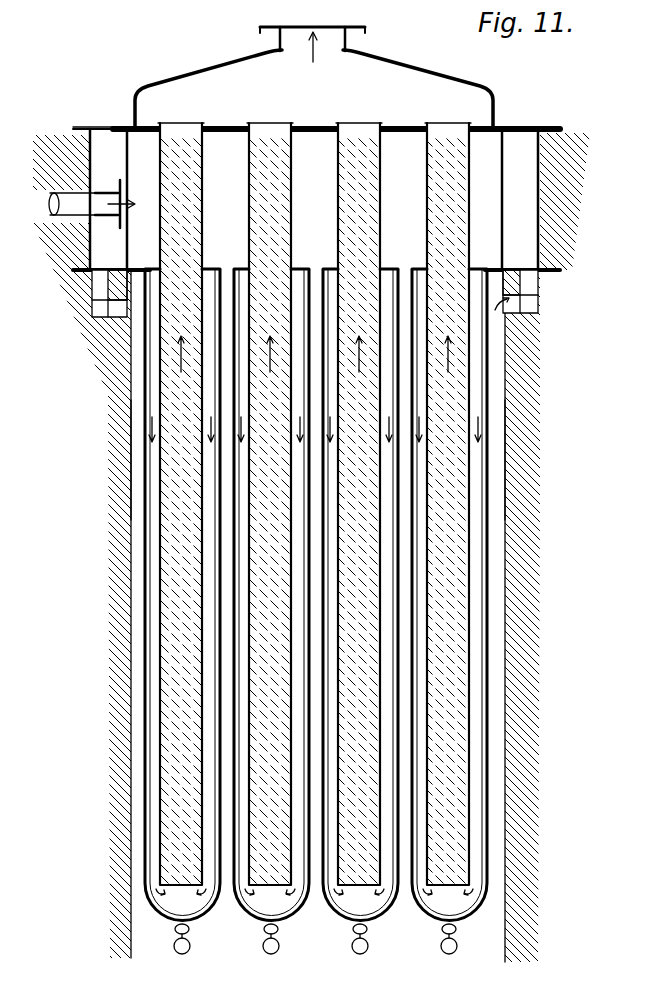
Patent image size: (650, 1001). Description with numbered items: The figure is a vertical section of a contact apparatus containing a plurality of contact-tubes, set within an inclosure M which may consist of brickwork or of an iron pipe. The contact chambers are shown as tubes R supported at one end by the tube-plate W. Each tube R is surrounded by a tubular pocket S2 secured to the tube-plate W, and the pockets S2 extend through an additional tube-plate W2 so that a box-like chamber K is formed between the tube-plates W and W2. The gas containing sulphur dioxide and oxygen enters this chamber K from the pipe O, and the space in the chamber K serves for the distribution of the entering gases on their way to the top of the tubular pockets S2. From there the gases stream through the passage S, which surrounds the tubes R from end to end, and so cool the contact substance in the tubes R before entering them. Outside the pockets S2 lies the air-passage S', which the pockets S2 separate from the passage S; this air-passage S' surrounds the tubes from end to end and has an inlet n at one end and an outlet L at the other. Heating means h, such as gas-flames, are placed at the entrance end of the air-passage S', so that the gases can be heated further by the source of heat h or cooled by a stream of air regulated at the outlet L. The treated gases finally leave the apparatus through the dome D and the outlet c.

The inclosure M is at (311, 547).
The outlet L is at (112, 127).
The tube-plate W is at (80, 127).
The dome D is at (314, 89).
The outlet c is at (312, 44).
The box-like chamber K is at (314, 199).
The pipe O is at (50, 205).
The additional tube-plate W2 is at (88, 273).
The tubular pocket S2 is at (487, 386).
The air-passage S' is at (353, 460).
The contact-tube R is at (314, 508).
The passage S is at (314, 448).
The heating means h is at (325, 939).
The inlet n is at (324, 978).